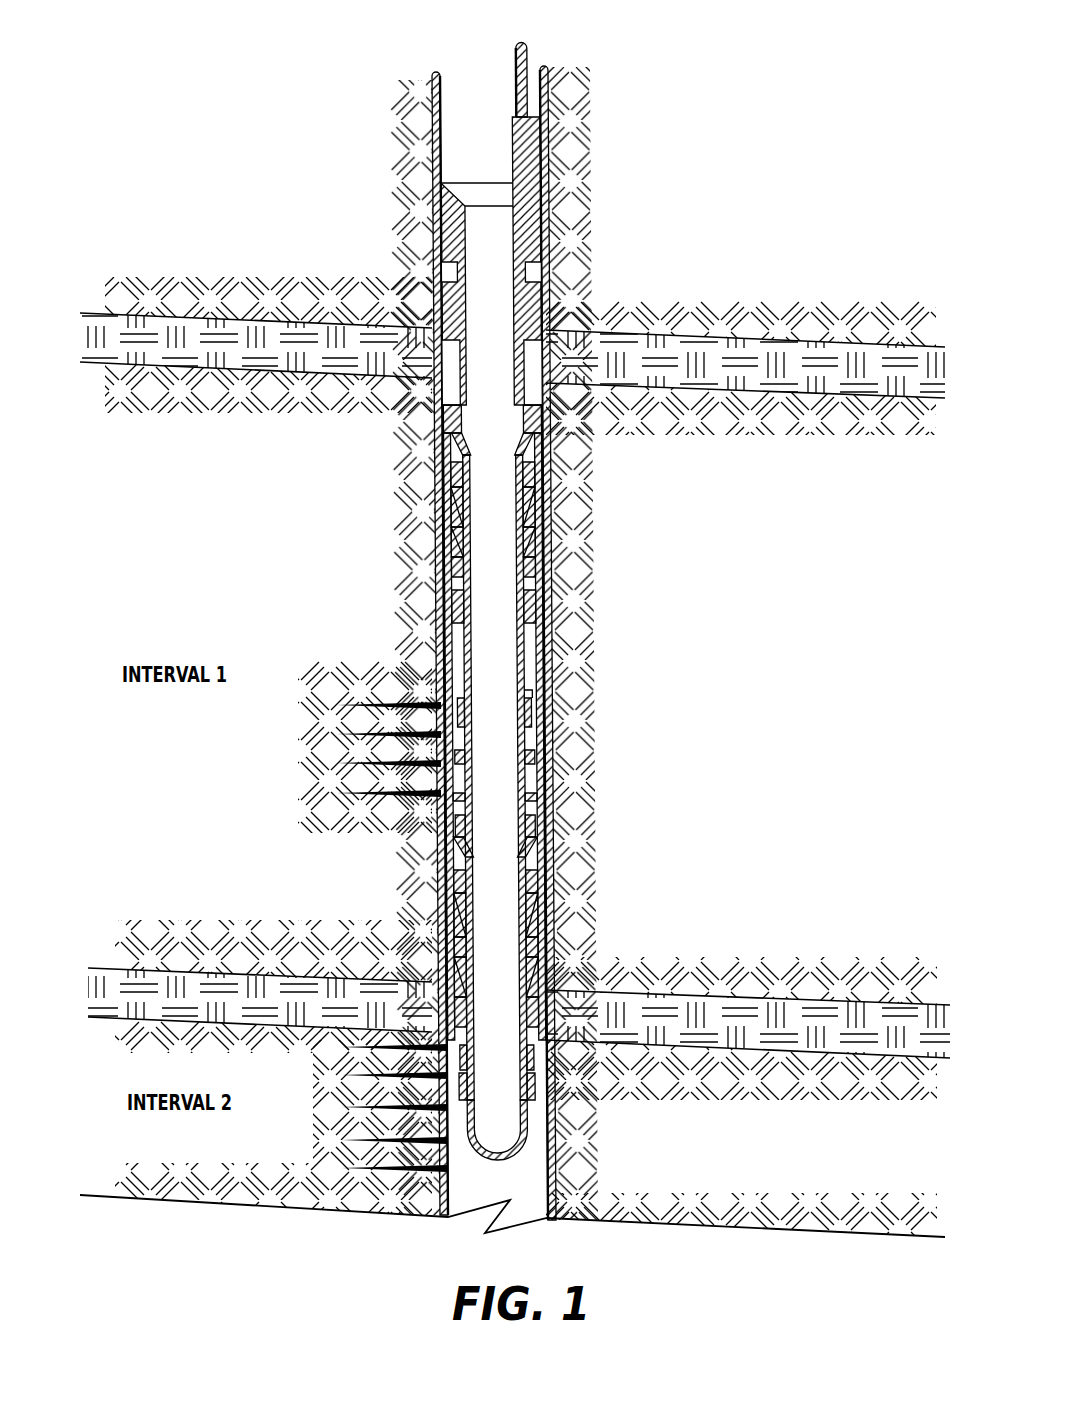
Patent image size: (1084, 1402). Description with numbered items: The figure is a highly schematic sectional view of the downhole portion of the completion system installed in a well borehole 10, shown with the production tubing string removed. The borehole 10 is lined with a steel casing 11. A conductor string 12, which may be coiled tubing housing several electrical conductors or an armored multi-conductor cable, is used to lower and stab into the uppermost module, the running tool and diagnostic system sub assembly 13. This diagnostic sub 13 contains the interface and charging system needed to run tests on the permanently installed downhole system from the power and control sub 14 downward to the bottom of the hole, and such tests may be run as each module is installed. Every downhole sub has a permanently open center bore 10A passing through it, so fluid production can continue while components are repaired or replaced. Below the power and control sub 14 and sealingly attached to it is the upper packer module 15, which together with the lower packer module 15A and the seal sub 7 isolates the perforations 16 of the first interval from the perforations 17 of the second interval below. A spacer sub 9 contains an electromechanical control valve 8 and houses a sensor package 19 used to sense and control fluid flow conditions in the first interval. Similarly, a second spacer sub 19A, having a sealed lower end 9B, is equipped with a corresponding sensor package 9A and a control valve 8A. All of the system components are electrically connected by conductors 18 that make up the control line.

The borehole 10 is at (487, 615).
The center bore 10A is at (476, 360).
The steel casing 11 is at (430, 97).
The conductor string 12 is at (529, 60).
The running tool and diagnostic system sub assembly 13 is at (530, 242).
The power and control sub 14 is at (535, 365).
The upper packer module 15 is at (535, 545).
The lower packer module 15A is at (535, 945).
The perforations of Interval #1 16 is at (355, 737).
The perforations of interval #2 17 is at (338, 1141).
The conductors 18 is at (529, 450).
The sensor package 19 is at (452, 700).
The second spacer sub 19A is at (450, 1085).
The seal sub 7 is at (532, 797).
The electromechanical control valve 8 is at (530, 710).
The control valve 8A is at (533, 1087).
The spacer sub 9 is at (524, 637).
The sensor package 9A is at (541, 1038).
The sealed lower end 9B is at (530, 1147).